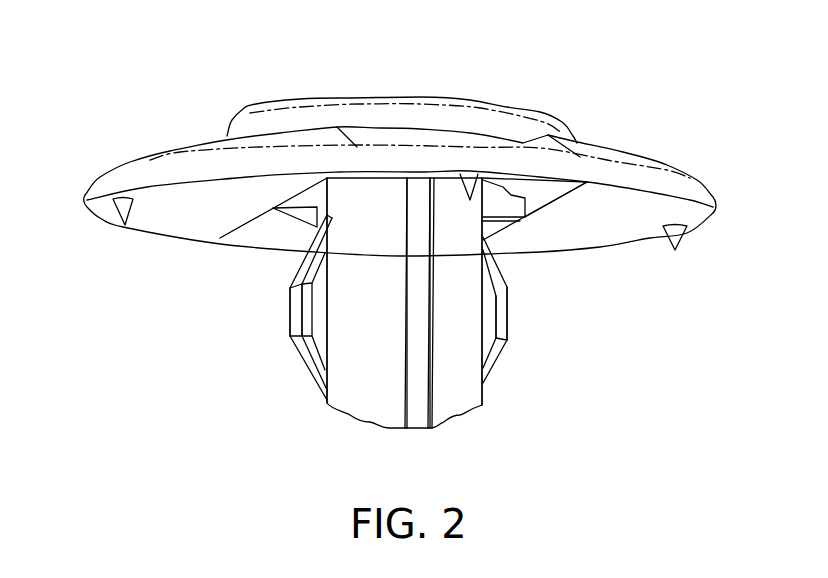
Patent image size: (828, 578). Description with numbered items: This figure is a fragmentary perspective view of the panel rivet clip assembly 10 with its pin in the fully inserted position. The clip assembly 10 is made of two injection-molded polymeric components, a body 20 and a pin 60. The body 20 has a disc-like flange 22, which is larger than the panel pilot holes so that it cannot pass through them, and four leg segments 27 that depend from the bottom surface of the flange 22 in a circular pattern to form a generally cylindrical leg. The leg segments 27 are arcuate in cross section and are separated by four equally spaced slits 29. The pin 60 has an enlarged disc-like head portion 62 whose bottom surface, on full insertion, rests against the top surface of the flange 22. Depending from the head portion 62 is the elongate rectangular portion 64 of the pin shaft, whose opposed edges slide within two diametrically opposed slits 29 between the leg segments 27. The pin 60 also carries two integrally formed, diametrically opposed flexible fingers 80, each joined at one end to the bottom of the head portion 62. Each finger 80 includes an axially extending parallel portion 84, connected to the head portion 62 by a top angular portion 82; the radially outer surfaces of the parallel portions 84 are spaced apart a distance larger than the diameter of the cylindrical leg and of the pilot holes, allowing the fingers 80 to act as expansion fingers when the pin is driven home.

The clip assembly 10 is at (120, 139).
The body 20 is at (630, 140).
The disc-like flange 22 is at (660, 181).
The leg segments 27 is at (347, 325).
The slits 29 is at (445, 268).
The pin 60 is at (536, 97).
The head portion 62 is at (449, 102).
The rectangular portion 64 is at (413, 358).
The flexible fingers 80 is at (290, 429).
The top angular portions 82 is at (307, 263).
The parallel portions 84 is at (297, 312).